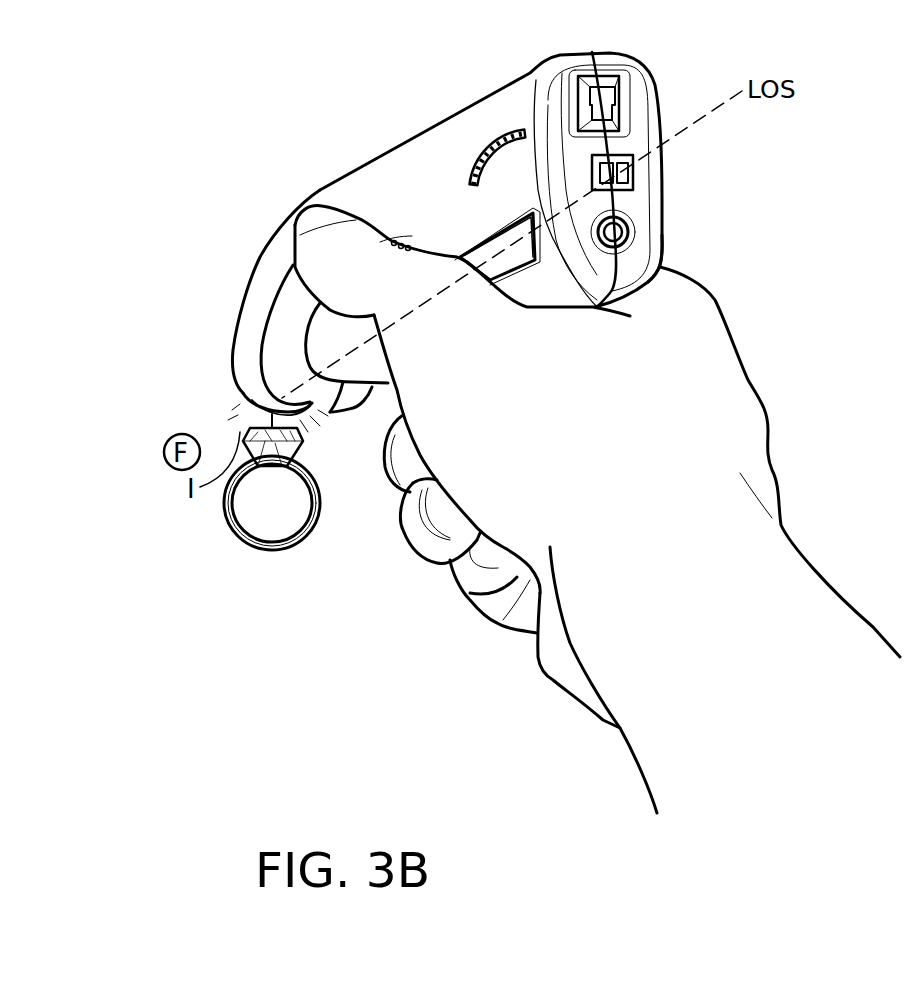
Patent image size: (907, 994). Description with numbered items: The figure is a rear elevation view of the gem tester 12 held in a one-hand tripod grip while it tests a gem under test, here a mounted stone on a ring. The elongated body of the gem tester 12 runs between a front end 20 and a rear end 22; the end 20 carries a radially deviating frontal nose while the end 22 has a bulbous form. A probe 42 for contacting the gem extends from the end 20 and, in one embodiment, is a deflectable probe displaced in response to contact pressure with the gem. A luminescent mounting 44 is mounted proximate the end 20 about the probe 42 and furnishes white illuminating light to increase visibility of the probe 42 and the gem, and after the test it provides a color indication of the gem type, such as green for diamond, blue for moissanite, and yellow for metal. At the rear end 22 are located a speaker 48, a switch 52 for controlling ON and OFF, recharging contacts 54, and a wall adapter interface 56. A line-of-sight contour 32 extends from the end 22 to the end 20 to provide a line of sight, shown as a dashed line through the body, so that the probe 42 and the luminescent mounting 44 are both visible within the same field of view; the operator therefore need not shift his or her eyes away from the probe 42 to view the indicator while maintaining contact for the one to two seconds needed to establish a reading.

The gem tester 12 is at (433, 121).
The end 20 is at (230, 353).
The end 22 is at (660, 252).
The line-of-sight contour 32 is at (292, 302).
The probe 42 is at (248, 414).
The luminescent mounting 44 is at (312, 415).
The speaker 48 is at (468, 170).
The switch 52 is at (612, 95).
The recharging contacts 54 is at (633, 171).
The wall adapter interface 56 is at (630, 232).